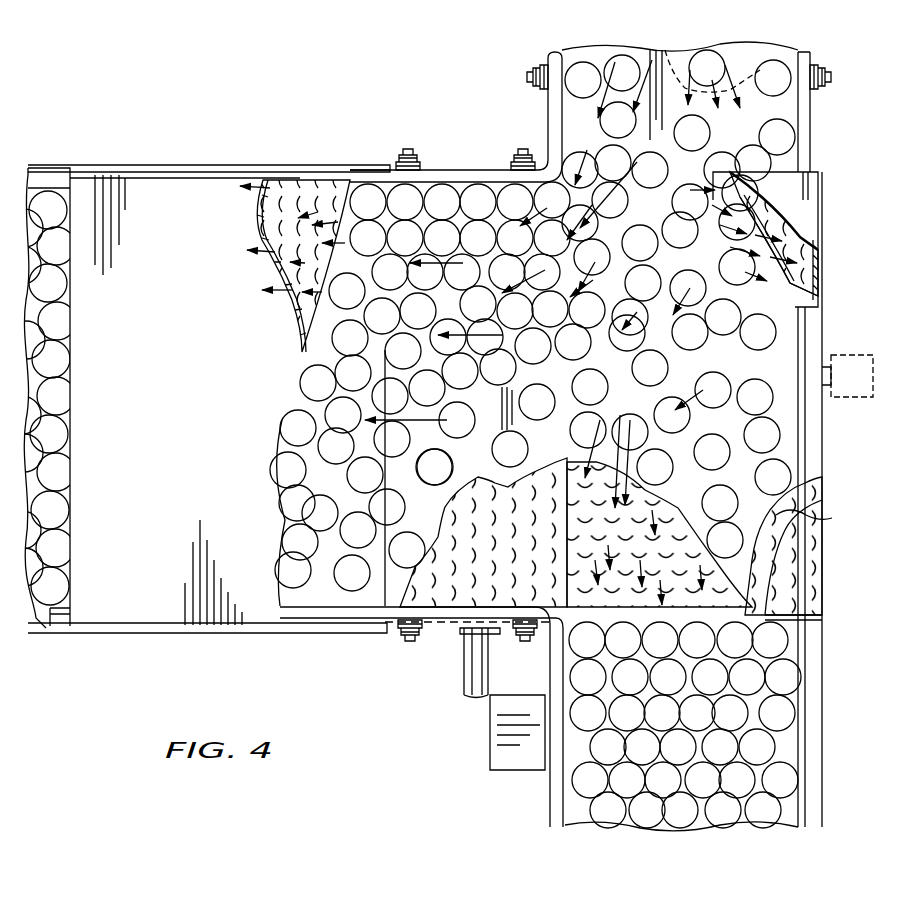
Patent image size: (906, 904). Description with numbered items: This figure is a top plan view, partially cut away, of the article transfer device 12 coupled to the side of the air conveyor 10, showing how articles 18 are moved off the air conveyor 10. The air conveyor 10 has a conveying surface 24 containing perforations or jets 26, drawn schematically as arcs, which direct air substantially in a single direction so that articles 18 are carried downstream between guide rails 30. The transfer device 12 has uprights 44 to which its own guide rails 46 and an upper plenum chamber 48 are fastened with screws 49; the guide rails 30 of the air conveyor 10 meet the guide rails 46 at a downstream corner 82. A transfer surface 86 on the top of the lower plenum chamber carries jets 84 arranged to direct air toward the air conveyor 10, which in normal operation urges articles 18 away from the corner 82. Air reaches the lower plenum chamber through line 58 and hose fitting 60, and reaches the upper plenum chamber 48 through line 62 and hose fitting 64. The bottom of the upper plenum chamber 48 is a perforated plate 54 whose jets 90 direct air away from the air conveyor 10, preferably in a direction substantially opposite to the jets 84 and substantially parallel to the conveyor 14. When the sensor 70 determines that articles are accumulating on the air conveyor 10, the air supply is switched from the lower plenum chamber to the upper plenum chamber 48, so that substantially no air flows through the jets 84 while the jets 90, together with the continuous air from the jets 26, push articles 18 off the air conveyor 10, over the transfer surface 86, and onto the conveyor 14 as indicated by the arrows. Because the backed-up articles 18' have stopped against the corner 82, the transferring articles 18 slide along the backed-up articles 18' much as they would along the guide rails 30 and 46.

The air conveyor 10 is at (812, 145).
The article transfer device 12 is at (172, 200).
The conveyor 14 is at (38, 168).
The articles 18 is at (678, 186).
The backed-up articles 18' is at (683, 736).
The conveying surface 24 is at (780, 72).
The perforations or jets 26 is at (630, 430).
The guide rails 30 is at (548, 95).
The uprights 44 is at (382, 166).
The guide rails 46 is at (470, 170).
The upper plenum chamber 48 is at (128, 190).
The screws 49 is at (408, 148).
The perforated plate 54 is at (300, 180).
The line 58 is at (470, 665).
The hose fitting 60 is at (480, 634).
The line 62 is at (872, 396).
The hose fitting 64 is at (832, 362).
The sensor 70 is at (516, 765).
The downstream corner 82 is at (570, 640).
The jets or perforations 84 is at (492, 480).
The transfer surface 86 is at (438, 513).
The jets or perforations 90 is at (300, 330).